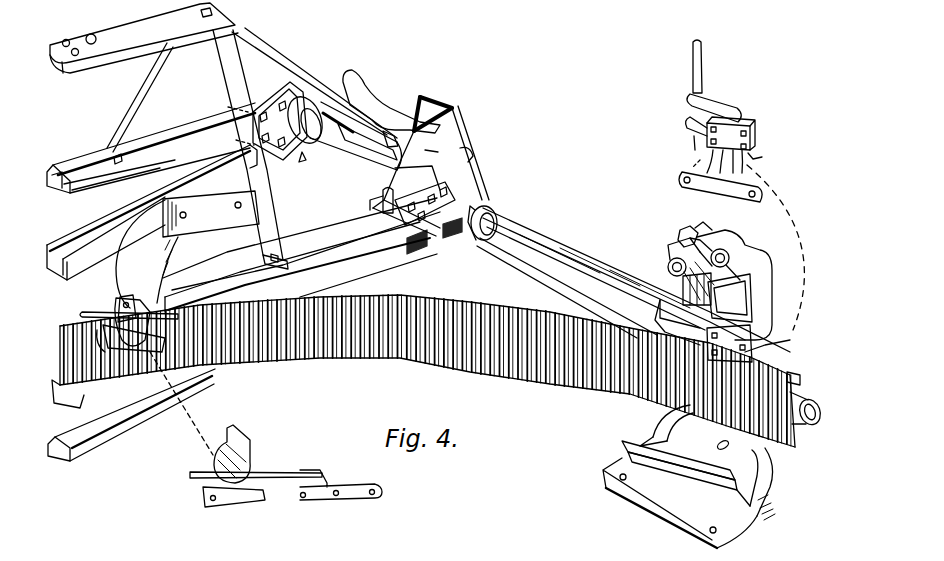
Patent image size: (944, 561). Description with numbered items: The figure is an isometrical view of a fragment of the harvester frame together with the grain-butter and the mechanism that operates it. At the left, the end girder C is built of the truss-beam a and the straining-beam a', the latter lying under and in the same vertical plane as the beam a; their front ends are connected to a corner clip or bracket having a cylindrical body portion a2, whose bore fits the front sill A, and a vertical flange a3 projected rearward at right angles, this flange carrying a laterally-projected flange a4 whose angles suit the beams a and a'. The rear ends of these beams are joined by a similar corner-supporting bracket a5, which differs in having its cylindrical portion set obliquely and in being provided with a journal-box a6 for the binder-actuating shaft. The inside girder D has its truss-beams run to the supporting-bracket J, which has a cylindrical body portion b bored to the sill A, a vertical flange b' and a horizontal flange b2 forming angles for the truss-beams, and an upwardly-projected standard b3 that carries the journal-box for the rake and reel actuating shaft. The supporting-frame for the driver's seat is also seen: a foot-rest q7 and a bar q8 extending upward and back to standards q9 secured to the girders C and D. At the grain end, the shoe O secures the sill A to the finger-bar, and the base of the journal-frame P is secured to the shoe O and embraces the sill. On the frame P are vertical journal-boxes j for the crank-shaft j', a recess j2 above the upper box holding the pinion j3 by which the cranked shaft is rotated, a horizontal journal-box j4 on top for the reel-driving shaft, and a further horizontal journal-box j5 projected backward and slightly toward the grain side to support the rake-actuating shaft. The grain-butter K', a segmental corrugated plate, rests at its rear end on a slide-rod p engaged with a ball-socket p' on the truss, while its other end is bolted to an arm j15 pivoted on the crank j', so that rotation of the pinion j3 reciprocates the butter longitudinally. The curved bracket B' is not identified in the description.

The bar q8 is at (300, 54).
The standards q9 is at (167, 56).
The cylindrical body portion a2 is at (307, 92).
The foot-rest q7 is at (389, 115).
The vertical flange a3 is at (304, 185).
The laterally-projected flange a4 is at (290, 133).
The truss-beam a is at (151, 148).
The end girder C is at (116, 179).
The straining-beam a' is at (152, 212).
The curved bracket B' is at (187, 268).
The slide-rod p is at (231, 399).
The ball-socket p' is at (191, 400).
The corner-supporting clip or bracket a5 is at (797, 361).
The inside girder D is at (301, 267).
The horizontal flange b2 is at (430, 242).
The vertical flange b' is at (374, 202).
The supporting-bracket J is at (431, 166).
The upwardly-projected standard b3 is at (429, 142).
The cylindrical body portion b is at (482, 212).
The sill A is at (560, 253).
The grain-butter K' is at (423, 371).
The journal-box a6 is at (131, 415).
The shoe O is at (689, 476).
The journal-frame P is at (742, 248).
The crank-shaft j' is at (703, 176).
The arm j15 is at (748, 248).
The vertical journal-boxes j is at (699, 317).
The pinion j3 is at (669, 270).
The recess j2 is at (727, 263).
The horizontal journal-box j5 is at (680, 235).
The horizontal journal-box j4 is at (700, 232).